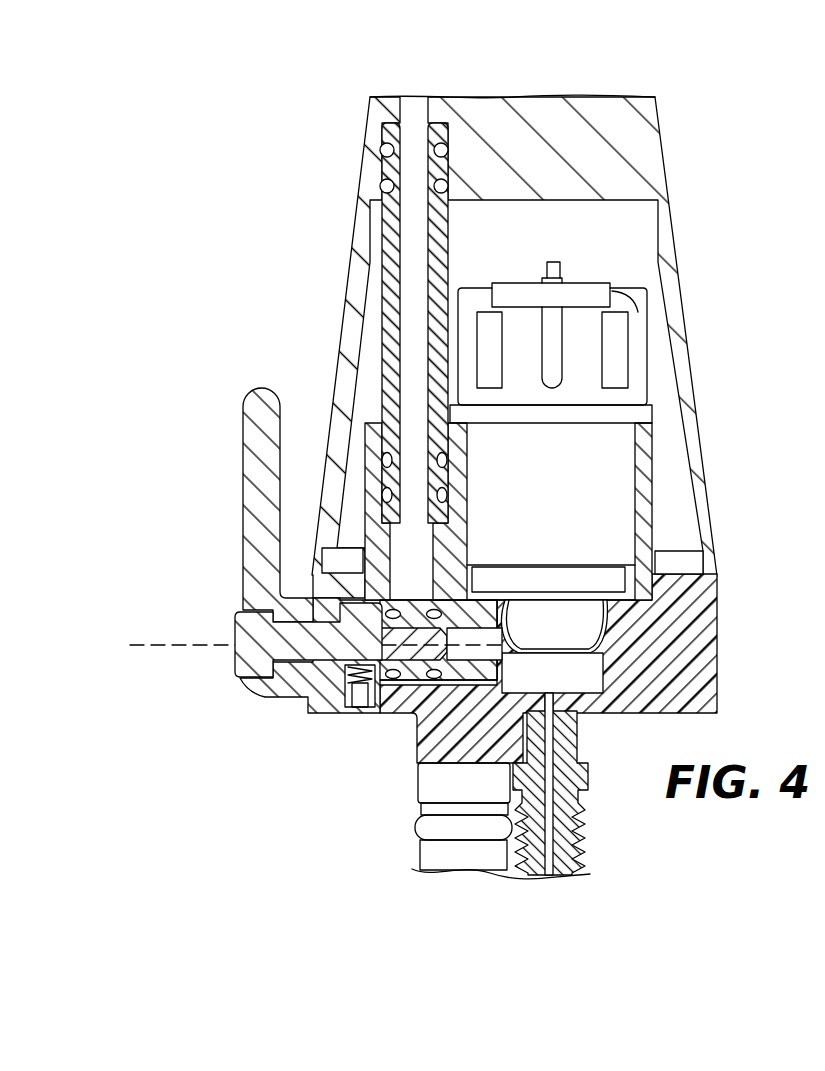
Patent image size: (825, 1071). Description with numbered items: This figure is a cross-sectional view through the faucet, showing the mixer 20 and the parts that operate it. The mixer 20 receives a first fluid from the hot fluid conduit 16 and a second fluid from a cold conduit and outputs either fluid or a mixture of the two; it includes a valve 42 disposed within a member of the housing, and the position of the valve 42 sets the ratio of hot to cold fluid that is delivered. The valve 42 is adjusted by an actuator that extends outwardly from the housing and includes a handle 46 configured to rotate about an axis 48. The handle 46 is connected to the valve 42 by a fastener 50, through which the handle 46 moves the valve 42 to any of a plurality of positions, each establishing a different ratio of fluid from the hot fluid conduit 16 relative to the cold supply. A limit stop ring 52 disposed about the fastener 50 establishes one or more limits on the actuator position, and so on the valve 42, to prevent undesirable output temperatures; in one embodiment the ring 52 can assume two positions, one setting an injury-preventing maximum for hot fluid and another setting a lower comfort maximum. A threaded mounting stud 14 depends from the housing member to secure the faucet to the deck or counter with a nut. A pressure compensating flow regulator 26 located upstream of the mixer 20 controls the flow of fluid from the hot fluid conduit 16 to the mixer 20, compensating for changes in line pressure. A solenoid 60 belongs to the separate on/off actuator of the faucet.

The mounting stud 14 is at (580, 845).
The hot fluid conduit 16 is at (457, 850).
The mixer 20 is at (214, 545).
The pressure compensating flow regulator 26 is at (451, 822).
The valve 42 is at (407, 670).
The handle 46 is at (255, 447).
The axis 48 is at (180, 643).
The fastener 50 is at (268, 668).
The limit stop ring 52 is at (328, 695).
The solenoid 60 is at (612, 356).